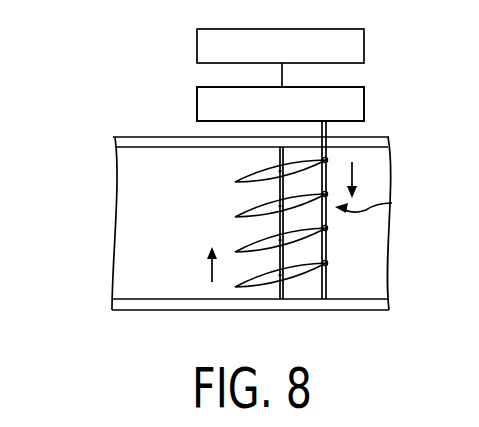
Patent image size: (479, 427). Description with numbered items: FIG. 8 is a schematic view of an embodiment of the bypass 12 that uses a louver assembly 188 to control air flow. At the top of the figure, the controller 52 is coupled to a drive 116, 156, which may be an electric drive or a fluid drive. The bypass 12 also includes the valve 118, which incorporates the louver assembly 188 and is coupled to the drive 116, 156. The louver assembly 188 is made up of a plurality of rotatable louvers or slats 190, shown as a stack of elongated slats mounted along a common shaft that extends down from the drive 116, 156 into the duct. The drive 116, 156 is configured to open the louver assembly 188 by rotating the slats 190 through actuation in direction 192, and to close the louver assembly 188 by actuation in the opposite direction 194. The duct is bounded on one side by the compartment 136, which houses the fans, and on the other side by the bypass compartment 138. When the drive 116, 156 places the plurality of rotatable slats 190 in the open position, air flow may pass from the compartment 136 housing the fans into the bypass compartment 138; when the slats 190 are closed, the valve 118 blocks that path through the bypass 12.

The bypass 12 is at (62, 88).
The controller 52 is at (364, 43).
The drive 156 is at (364, 100).
The drive 116 is at (197, 103).
The bypass compartment 138 is at (128, 192).
The compartment 136 is at (372, 283).
The louver assembly 188 is at (345, 233).
The slats 190 is at (240, 216).
The direction 194 is at (210, 268).
The direction 192 is at (356, 170).
The valve 118 is at (392, 203).